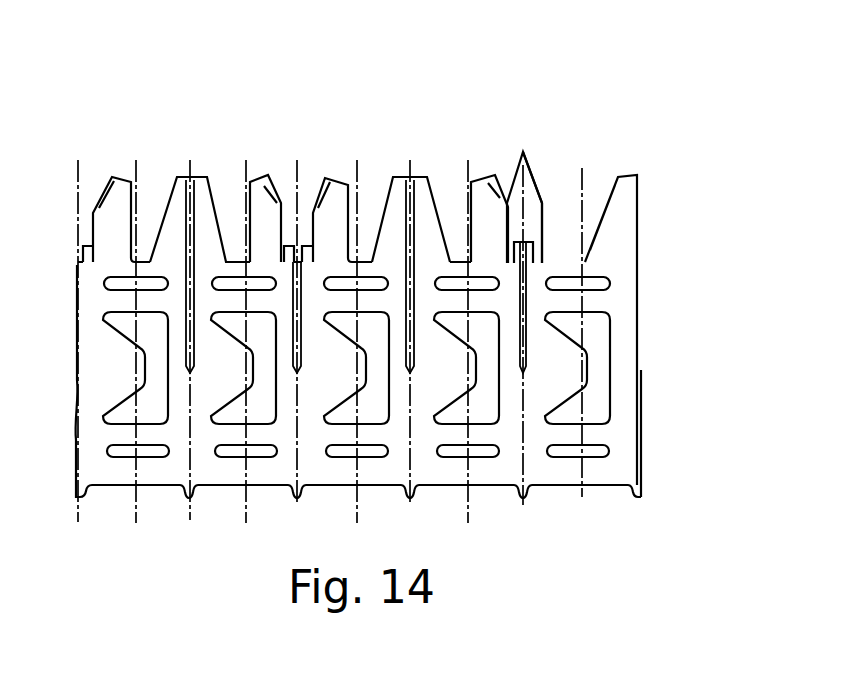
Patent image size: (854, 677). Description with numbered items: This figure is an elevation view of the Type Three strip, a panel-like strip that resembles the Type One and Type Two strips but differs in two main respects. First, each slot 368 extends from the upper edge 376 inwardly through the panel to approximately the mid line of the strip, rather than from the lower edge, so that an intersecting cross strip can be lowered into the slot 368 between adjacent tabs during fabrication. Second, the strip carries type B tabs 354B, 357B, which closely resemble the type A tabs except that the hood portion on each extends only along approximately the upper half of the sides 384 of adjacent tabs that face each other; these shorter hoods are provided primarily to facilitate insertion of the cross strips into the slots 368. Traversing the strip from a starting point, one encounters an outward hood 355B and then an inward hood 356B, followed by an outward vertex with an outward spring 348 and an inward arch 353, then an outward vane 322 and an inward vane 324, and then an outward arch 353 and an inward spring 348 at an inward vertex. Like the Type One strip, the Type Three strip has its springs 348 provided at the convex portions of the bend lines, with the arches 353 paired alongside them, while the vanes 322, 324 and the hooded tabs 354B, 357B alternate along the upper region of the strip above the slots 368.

The outward vane 322 is at (173, 185).
The inward vane 324 is at (216, 185).
The type B tab 354B is at (272, 195).
The type B tab 357B is at (332, 183).
The outward hood 355B is at (503, 190).
The inward hood 356B is at (543, 178).
The sides of adjacent tabs 384 is at (523, 152).
The upper edge 376 is at (590, 265).
The arch 353 is at (590, 268).
The slot 368 is at (521, 296).
The spring 348 is at (588, 383).